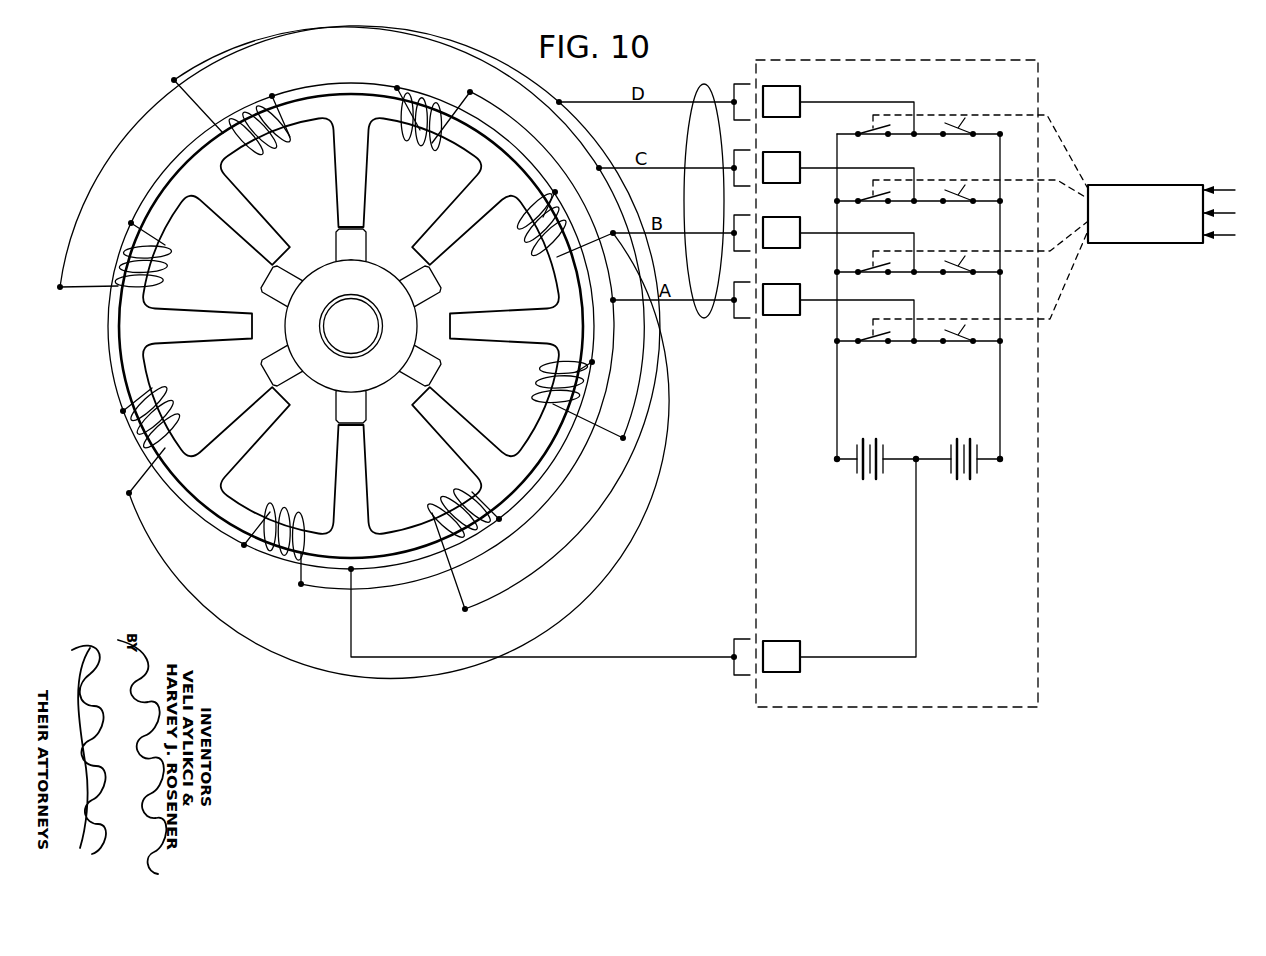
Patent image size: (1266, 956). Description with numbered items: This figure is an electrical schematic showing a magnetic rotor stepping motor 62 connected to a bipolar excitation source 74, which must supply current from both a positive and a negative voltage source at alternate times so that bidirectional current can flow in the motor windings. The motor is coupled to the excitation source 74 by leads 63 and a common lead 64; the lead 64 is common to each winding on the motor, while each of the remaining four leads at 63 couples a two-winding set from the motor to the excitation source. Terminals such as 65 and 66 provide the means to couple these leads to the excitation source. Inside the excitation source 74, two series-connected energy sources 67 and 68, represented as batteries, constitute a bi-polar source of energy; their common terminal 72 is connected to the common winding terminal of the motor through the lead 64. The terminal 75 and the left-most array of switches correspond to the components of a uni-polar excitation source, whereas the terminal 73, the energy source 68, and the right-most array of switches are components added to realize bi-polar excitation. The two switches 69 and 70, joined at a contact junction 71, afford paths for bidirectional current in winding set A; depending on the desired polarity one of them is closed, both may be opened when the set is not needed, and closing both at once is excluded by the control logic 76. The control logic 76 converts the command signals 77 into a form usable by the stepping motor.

The stepping motor stator 62 is at (528, 483).
The leads 63 is at (705, 318).
The common lead 64 is at (668, 656).
The terminal 65 is at (734, 650).
The terminal 66 is at (791, 641).
The energy source 67 is at (868, 442).
The energy source 68 is at (962, 442).
The switch 69 is at (873, 350).
The switch 70 is at (960, 345).
The switch contact junction 71 is at (912, 352).
The common terminal 72 is at (913, 465).
The terminal 73 is at (1000, 465).
The excitation source 74 is at (892, 383).
The terminal 75 is at (833, 459).
The control logic 76 is at (1120, 243).
The command signals 77 is at (1242, 235).